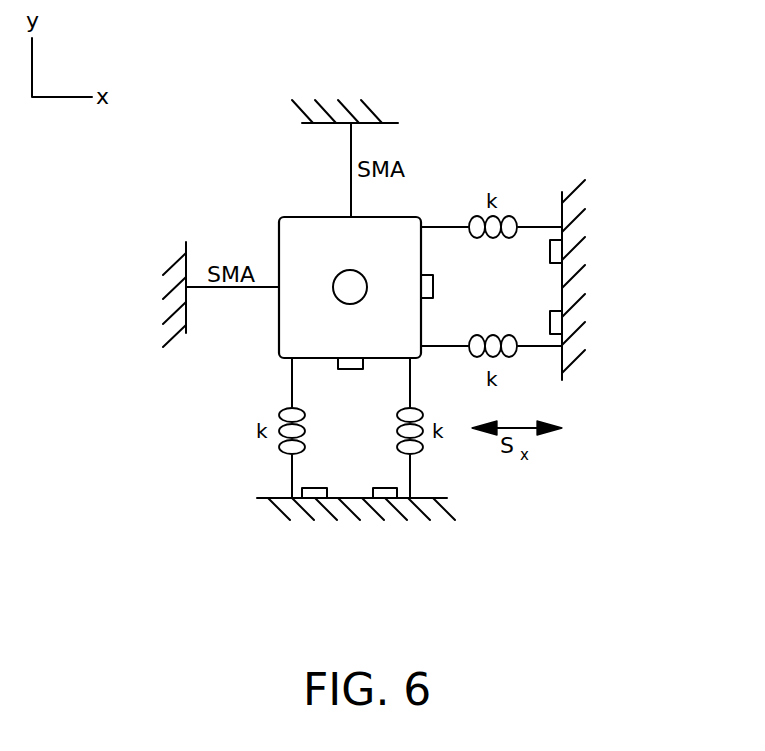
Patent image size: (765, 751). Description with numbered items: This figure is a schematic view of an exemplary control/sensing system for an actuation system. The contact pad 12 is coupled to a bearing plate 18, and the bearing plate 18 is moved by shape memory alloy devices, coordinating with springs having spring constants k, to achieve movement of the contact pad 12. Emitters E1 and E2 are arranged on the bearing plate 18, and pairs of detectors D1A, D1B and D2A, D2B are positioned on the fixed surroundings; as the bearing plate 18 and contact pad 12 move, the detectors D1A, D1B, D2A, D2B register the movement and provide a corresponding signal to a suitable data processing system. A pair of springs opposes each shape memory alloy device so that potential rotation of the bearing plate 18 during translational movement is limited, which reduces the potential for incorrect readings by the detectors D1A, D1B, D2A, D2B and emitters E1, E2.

The bearing plate 18 is at (281, 217).
The contact pad 12 is at (333, 293).
The emitter E1 is at (443, 291).
The emitter E2 is at (353, 377).
The detector D1A is at (559, 252).
The detector D1B is at (559, 323).
The detector D2A is at (315, 498).
The detector D2B is at (383, 498).